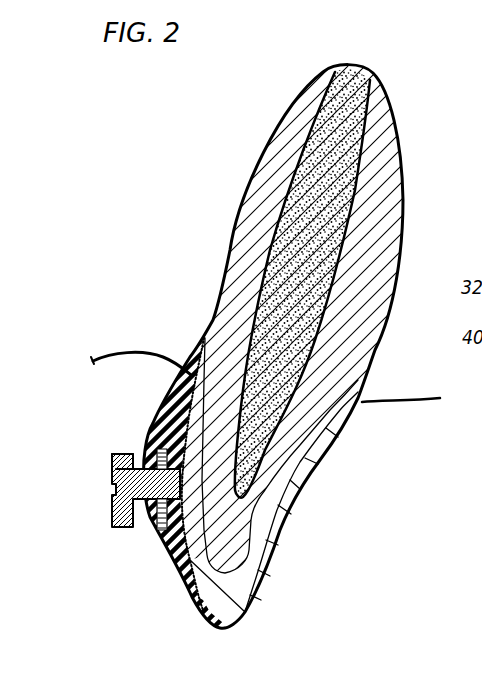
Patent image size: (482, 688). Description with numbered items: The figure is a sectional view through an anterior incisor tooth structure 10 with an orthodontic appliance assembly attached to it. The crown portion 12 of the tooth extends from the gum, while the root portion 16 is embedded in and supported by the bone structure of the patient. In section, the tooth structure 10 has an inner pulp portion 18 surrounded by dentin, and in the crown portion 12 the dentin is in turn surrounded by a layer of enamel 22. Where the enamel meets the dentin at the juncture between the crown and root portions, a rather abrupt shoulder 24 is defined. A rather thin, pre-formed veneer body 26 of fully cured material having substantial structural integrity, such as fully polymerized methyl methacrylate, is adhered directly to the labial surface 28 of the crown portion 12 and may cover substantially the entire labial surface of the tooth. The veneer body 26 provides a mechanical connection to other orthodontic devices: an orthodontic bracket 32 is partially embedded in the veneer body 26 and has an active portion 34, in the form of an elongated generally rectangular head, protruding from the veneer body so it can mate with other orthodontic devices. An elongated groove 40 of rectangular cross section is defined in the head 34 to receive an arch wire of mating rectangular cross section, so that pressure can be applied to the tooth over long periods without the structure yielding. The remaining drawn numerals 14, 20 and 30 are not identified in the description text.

The tooth structure 10 is at (335, 471).
The crown portion 12 is at (283, 530).
The upper 14 is at (92, 363).
The root portion 16 is at (397, 158).
The inner pulp portion 18 is at (310, 196).
The hatched shell wall 20 is at (363, 293).
The layer of enamel 22 is at (253, 584).
The shoulder 24 is at (365, 386).
The thin veneer body 26 is at (170, 545).
The labial surface 28 is at (153, 421).
The lining layer 30 is at (182, 588).
The orthodontic bracket 32 is at (241, 344).
The active portion 34 is at (112, 463).
The elongated groove 40 is at (113, 492).